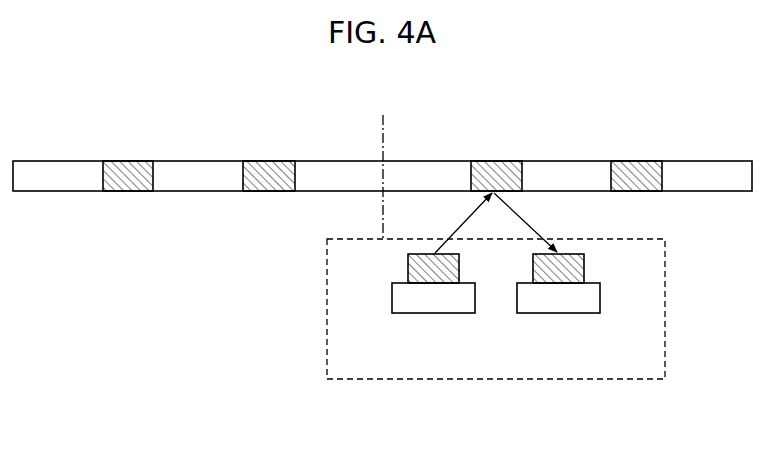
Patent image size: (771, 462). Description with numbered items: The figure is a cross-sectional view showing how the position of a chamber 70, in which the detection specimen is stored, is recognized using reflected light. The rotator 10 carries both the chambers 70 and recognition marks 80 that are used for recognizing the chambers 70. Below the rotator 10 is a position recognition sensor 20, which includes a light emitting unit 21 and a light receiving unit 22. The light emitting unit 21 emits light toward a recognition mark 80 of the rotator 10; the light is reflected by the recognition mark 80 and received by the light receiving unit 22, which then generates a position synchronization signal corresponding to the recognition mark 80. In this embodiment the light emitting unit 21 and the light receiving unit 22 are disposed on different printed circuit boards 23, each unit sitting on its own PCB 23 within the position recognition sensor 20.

The rotator 10 is at (700, 155).
The position recognition sensor 20 is at (497, 380).
The light emitting unit 21 is at (408, 269).
The light receiving unit 22 is at (584, 269).
The printed circuit board 23 is at (434, 314).
The chamber 70 is at (128, 160).
The recognition mark 80 is at (269, 160).